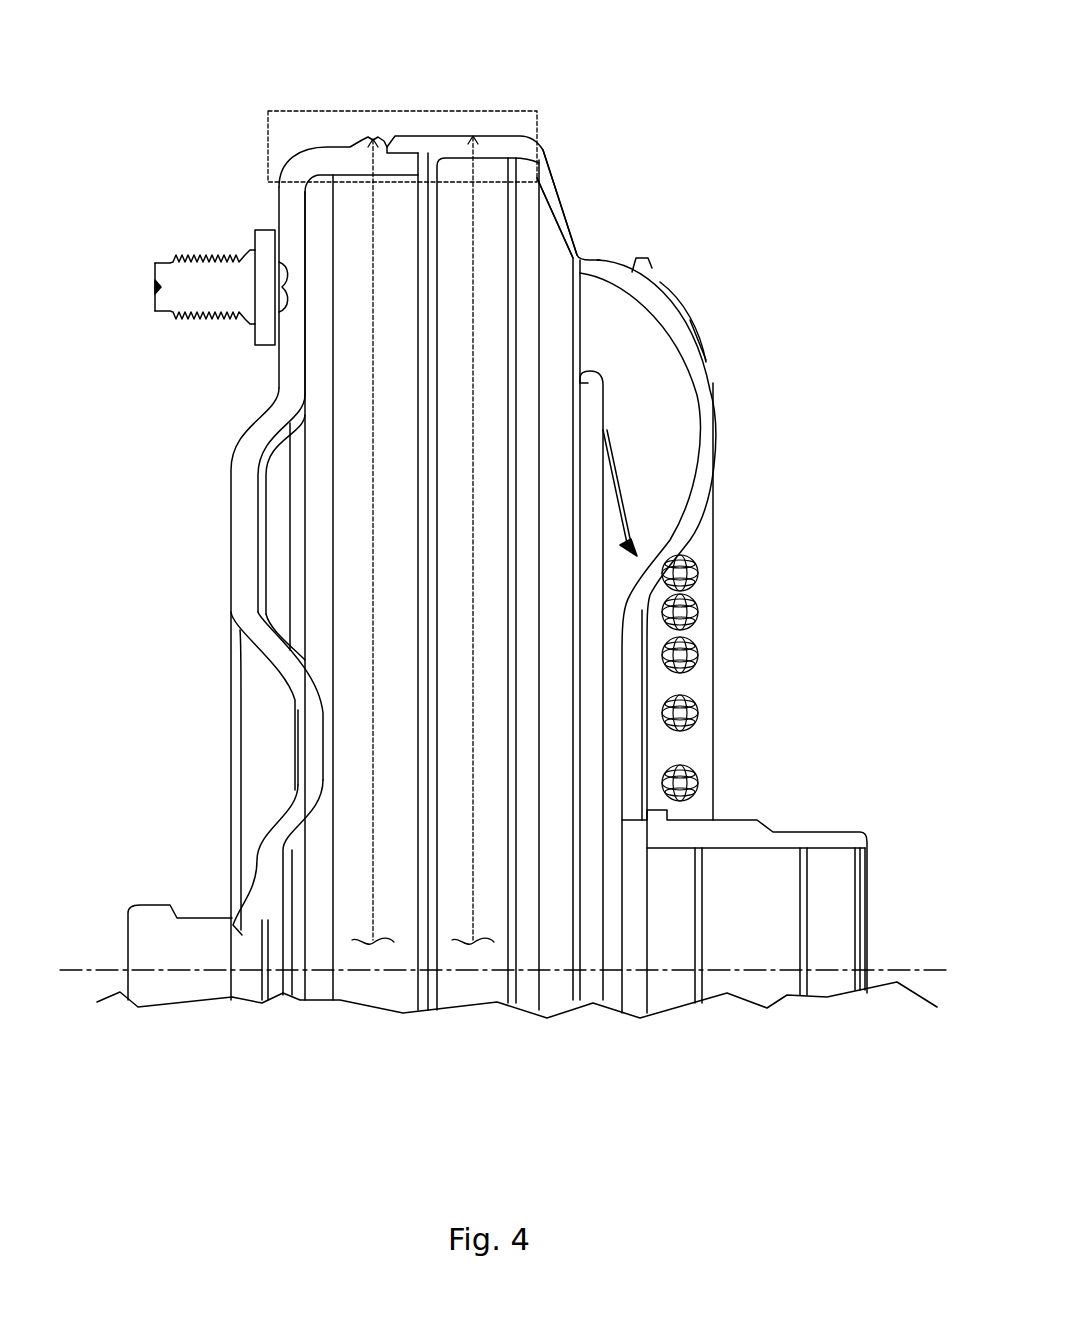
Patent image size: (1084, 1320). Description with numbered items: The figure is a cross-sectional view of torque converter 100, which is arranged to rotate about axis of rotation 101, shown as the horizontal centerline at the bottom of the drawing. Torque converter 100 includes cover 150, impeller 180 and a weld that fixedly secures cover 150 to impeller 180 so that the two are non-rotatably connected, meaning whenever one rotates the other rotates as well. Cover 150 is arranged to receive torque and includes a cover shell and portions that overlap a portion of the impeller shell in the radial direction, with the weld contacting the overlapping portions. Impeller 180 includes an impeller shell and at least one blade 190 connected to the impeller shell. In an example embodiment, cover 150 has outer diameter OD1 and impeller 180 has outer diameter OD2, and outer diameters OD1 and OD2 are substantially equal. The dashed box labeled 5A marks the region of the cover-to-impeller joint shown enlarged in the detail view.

The torque converter 100 is at (219, 60).
The cover 150 is at (290, 216).
The impeller 180 is at (557, 195).
The blade 190 is at (647, 413).
The axis of rotation 101 is at (832, 970).
The outer diameter OD1 is at (373, 356).
The outer diameter OD2 is at (477, 253).
The detail view callout 5A is at (487, 111).